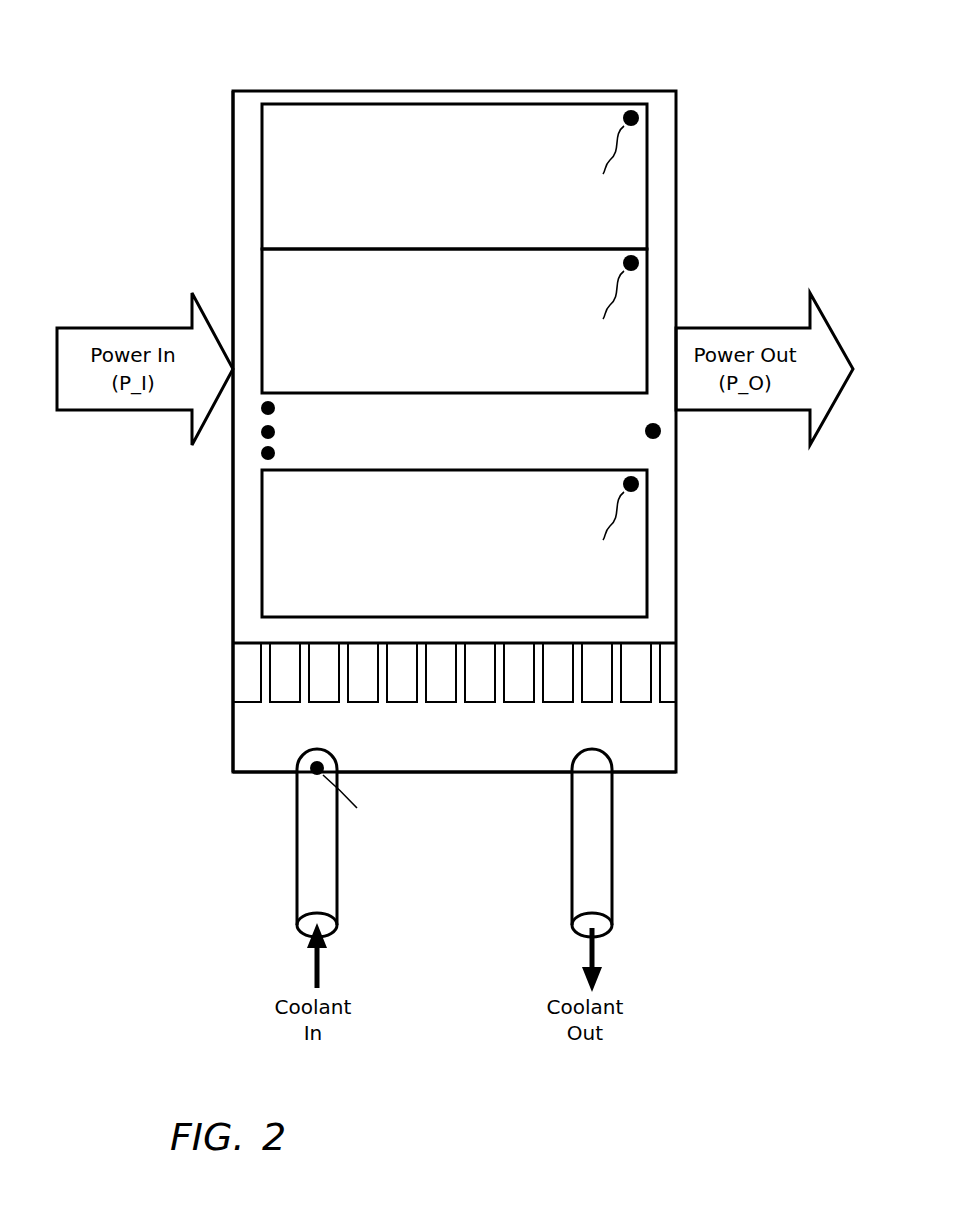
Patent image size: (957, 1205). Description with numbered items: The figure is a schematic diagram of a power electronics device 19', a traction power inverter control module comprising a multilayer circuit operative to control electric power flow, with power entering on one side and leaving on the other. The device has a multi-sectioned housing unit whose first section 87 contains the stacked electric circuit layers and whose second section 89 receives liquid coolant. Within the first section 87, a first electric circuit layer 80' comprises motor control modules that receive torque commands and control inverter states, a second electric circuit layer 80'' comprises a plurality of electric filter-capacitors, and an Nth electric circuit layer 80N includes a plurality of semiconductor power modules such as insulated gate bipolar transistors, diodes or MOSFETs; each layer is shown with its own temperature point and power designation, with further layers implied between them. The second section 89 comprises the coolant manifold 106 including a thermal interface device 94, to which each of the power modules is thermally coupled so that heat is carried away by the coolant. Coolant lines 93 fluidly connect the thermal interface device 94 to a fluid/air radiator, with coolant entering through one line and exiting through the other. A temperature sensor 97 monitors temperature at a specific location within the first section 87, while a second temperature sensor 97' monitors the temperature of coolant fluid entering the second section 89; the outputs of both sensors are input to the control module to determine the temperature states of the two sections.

The power electronics device 19' is at (460, 450).
The first electric circuit layer 80' is at (512, 176).
The second electric circuit layer 80'' is at (514, 321).
The Nth electric circuit layer 80N is at (648, 550).
The temperature sensor 97 is at (712, 445).
The first section 87 is at (232, 497).
The second section 89 is at (232, 660).
The coolant manifold 106 is at (236, 678).
The thermal interface device 94 is at (650, 749).
The temperature sensor 97' is at (293, 797).
The coolant lines 93 is at (568, 937).